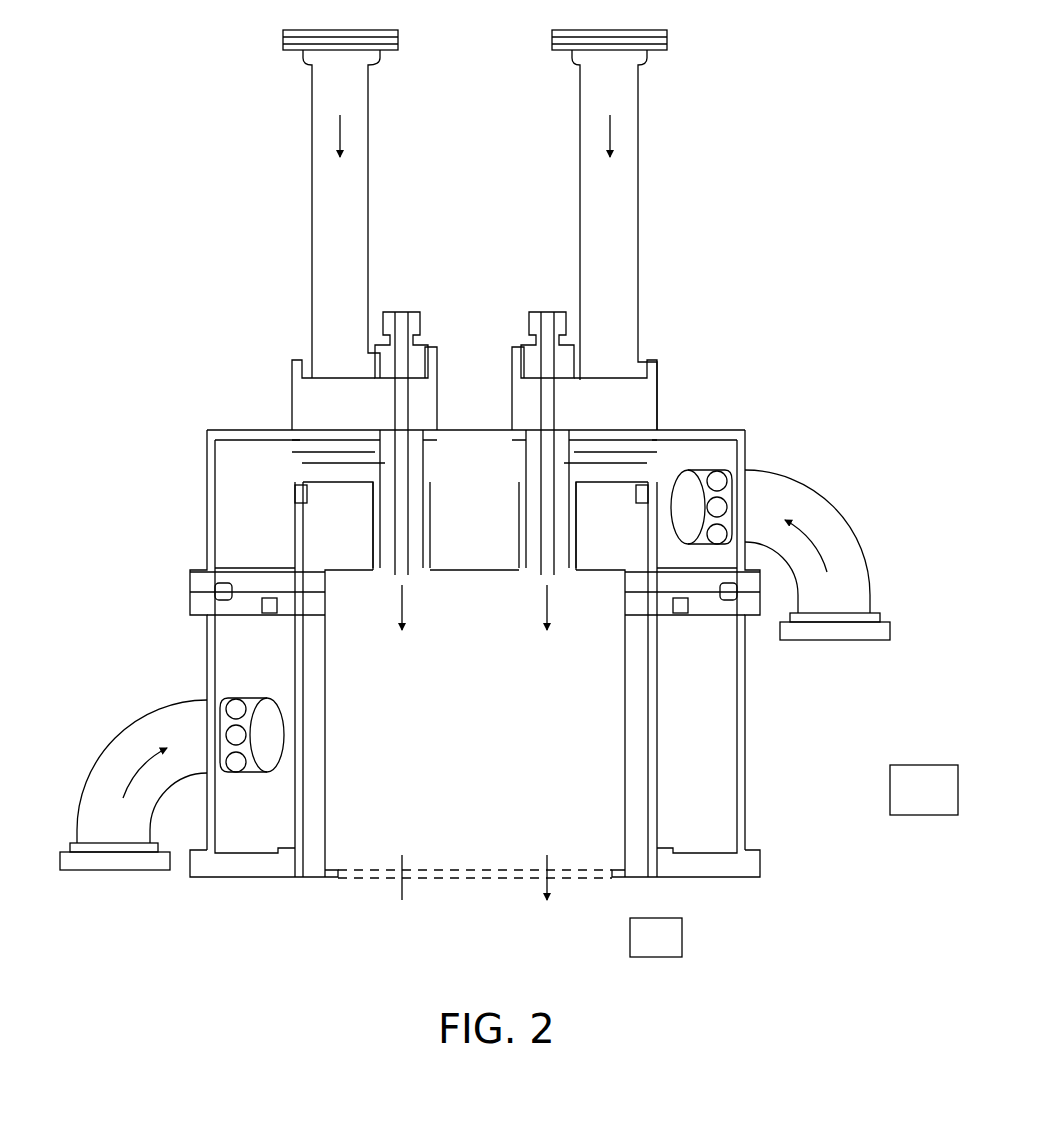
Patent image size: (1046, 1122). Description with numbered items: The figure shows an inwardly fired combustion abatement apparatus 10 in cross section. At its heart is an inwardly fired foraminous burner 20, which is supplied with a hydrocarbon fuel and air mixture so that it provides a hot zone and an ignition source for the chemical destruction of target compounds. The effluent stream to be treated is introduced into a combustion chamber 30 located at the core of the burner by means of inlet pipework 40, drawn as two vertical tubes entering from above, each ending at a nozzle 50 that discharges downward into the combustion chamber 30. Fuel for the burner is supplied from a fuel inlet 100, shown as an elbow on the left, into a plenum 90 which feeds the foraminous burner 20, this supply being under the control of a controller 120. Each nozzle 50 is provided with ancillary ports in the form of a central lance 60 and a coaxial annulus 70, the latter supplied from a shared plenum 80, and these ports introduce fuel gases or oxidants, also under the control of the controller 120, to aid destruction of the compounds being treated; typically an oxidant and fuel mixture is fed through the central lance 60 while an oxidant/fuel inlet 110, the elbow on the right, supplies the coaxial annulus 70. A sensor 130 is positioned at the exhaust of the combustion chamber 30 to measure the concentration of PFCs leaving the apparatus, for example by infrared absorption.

The inwardly fired combustion abatement apparatus 10 is at (138, 92).
The inwardly fired foraminous burner 20 is at (316, 868).
The combustion chamber 30 is at (513, 729).
The inlet pipework 40 is at (310, 166).
The nozzle 50 is at (401, 575).
The central lance 60 is at (403, 312).
The coaxial annulus 70 is at (562, 575).
The shared plenum 80 is at (688, 455).
The plenum 90 is at (233, 658).
The fuel inlet 100 is at (118, 738).
The oxidant/fuel inlet 110 is at (866, 548).
The controller 120 is at (922, 762).
The sensor 130 is at (684, 936).